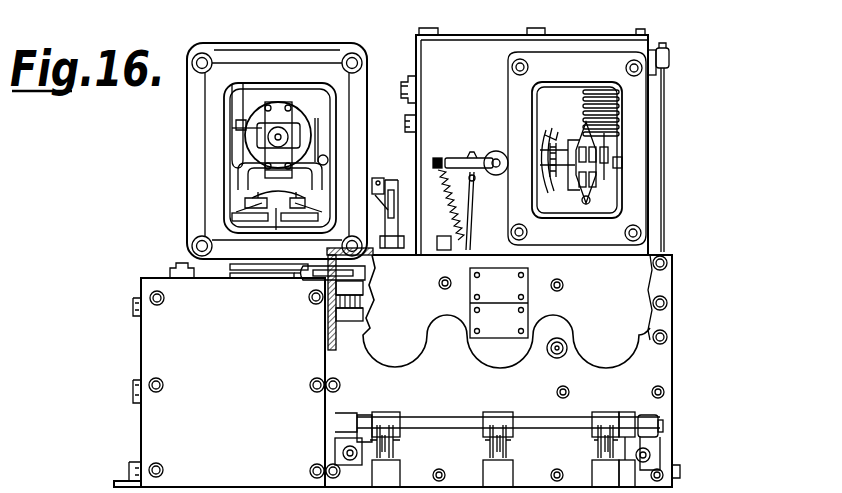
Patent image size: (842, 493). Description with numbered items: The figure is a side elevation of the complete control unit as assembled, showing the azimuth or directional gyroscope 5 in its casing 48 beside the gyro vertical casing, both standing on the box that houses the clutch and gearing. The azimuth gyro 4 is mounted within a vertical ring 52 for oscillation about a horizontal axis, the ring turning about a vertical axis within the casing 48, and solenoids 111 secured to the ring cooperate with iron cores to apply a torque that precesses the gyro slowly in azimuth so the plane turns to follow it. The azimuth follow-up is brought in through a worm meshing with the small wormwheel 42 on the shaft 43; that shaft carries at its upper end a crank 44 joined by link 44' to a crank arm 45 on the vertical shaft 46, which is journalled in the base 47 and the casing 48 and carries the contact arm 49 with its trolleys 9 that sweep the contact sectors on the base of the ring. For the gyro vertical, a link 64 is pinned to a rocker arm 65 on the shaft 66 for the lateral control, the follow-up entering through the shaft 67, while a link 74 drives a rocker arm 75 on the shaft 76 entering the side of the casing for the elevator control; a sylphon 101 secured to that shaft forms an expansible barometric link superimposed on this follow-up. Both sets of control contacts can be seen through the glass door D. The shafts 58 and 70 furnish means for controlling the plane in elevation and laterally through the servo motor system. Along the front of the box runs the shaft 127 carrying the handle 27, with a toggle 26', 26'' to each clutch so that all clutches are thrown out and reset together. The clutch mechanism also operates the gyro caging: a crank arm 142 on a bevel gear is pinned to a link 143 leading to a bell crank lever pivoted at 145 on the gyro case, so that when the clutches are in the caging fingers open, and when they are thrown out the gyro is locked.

The azimuth gyro 4 is at (293, 110).
The azimuth or directional gyroscope 5 is at (545, 130).
The trolleys 9 is at (276, 230).
The glass door D is at (605, 198).
The toggle 26' is at (534, 449).
The toggle 26'' is at (396, 449).
The handle 27 is at (660, 451).
The small wormwheel 42 is at (364, 304).
The shaft 43 is at (364, 336).
The crank 44 is at (351, 302).
The link 44' is at (296, 313).
The crank arm 45 is at (246, 280).
The vertical shaft 46 is at (276, 280).
The base 47 is at (167, 261).
The casing 48 is at (189, 146).
The contact arm 49 is at (278, 192).
The vertical ring 52 is at (232, 103).
The shaft 58 is at (570, 392).
The link 64 is at (470, 235).
The rocker arm 65 is at (447, 148).
The shaft 66 is at (493, 152).
The shaft 67 is at (446, 210).
The shaft 70 is at (562, 344).
The link 74 is at (664, 170).
The rocker arm 75 is at (669, 62).
The shaft 76 is at (659, 46).
The sylphon 101 is at (601, 92).
The solenoids 111 is at (232, 178).
The shaft 127 is at (427, 422).
The crank arm 142 is at (378, 178).
The link 143 is at (400, 211).
The pivot 145 is at (397, 253).